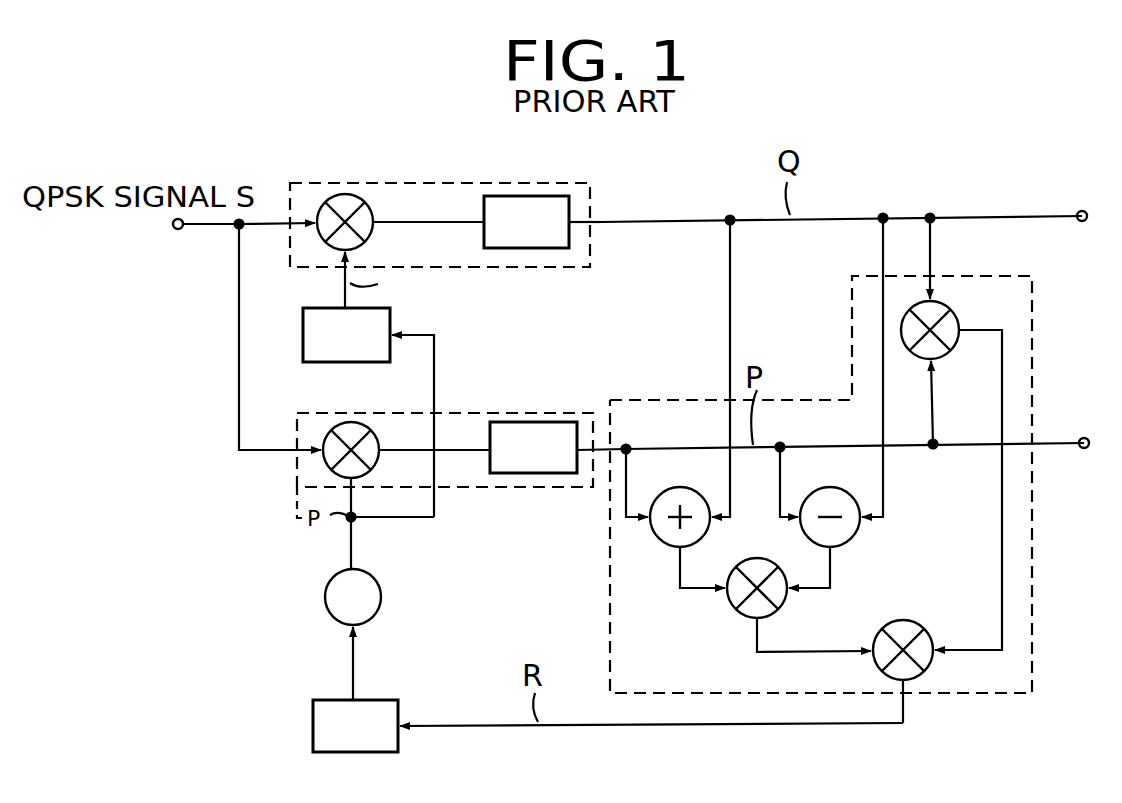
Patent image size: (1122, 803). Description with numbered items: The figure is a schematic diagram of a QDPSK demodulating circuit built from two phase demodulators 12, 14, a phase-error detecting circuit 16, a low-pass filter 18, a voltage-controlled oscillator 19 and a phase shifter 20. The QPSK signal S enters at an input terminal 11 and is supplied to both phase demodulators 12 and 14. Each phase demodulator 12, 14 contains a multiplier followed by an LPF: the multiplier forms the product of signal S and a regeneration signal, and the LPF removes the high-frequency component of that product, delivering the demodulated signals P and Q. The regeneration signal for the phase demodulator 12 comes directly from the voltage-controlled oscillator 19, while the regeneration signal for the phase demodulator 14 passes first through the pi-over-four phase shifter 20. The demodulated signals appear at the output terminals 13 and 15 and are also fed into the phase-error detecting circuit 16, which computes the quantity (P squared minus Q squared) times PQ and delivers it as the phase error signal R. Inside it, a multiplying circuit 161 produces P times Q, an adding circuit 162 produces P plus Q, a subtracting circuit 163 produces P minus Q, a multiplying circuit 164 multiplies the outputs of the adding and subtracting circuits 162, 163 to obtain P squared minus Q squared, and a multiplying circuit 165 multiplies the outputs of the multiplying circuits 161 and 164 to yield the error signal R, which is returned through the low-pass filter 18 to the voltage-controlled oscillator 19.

The input terminal 11 is at (180, 231).
The phase demodulator 12 is at (452, 411).
The P output terminal 13 is at (1083, 437).
The phase demodulator 14 is at (324, 182).
The Q output terminal 15 is at (1080, 210).
The phase-error detecting circuit 16 is at (1034, 303).
The low-pass filter 18 is at (390, 698).
The voltage-controlled oscillator 19 is at (383, 597).
The phase shifter 20 is at (395, 318).
The multiplying circuit 161 is at (956, 319).
The adding circuit 162 is at (656, 492).
The subtracting circuit 163 is at (855, 481).
The multiplying circuit 164 is at (765, 549).
The multiplying circuit 165 is at (898, 620).